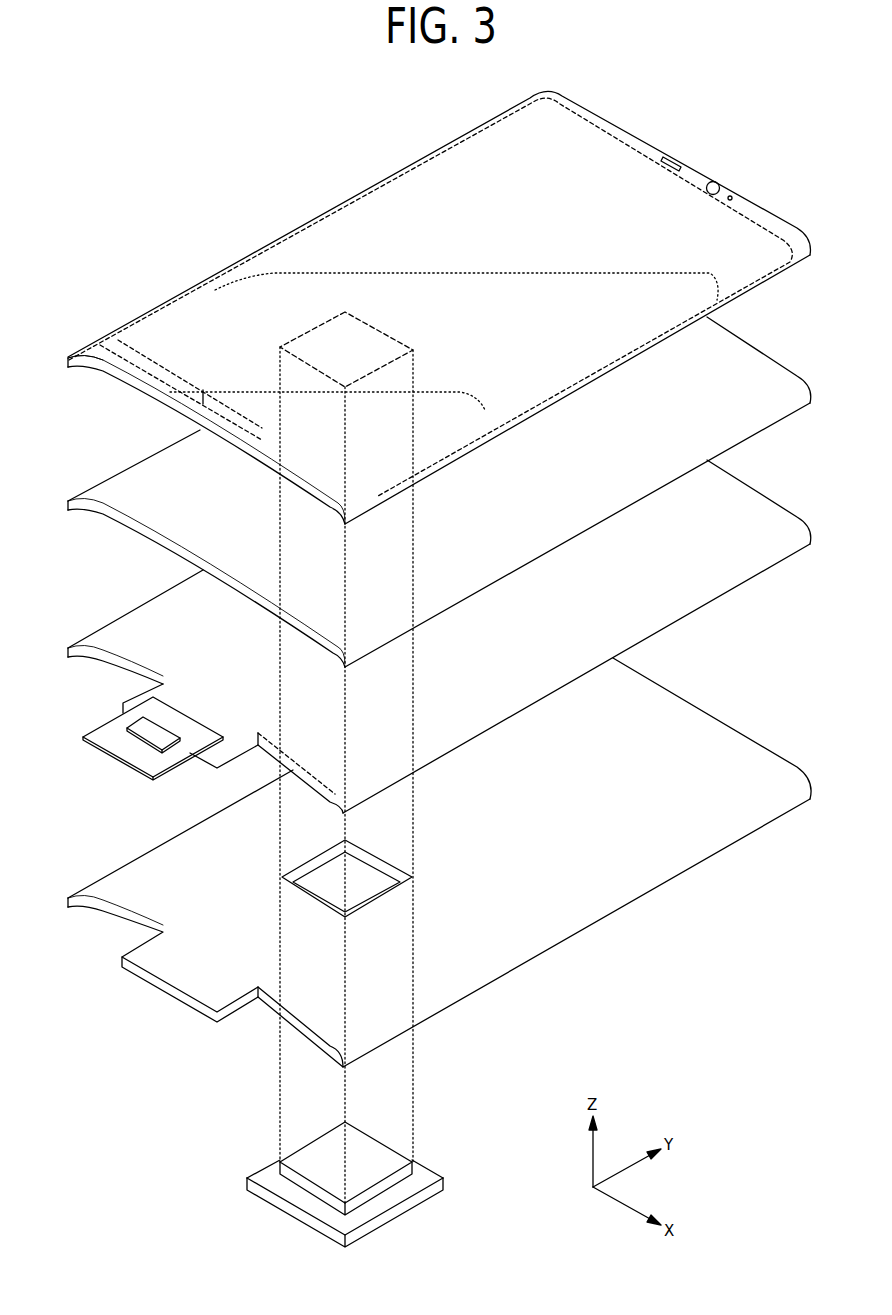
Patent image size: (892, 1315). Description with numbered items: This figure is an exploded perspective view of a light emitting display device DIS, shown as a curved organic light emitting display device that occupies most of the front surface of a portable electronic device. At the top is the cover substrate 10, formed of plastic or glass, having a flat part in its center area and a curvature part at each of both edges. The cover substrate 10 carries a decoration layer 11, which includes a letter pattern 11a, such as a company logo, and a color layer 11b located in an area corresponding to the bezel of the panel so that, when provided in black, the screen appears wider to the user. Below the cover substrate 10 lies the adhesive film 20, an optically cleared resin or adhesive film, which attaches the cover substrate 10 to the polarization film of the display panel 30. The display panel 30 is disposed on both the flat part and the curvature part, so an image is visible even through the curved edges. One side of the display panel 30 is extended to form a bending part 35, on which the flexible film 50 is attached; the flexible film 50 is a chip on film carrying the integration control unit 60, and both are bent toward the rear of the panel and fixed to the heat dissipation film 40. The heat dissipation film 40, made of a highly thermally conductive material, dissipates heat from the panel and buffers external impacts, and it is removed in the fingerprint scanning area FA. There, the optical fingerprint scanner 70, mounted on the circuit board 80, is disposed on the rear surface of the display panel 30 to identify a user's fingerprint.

The cover substrate 10 is at (443, 183).
The decoration layer 11 is at (152, 213).
The letter pattern 11a is at (203, 402).
The color layer 11b is at (98, 352).
The display device DIS is at (324, 166).
The fingerprint scanning area FA is at (327, 320).
The adhesive film 20 is at (738, 369).
The display panel 30 is at (738, 511).
The bending part 35 is at (122, 685).
The heat dissipation film 40 is at (734, 765).
The flexible film 50 is at (130, 750).
The integration control unit 60 is at (123, 717).
The fingerprint scanner 70 is at (343, 1167).
The circuit board 80 is at (387, 1213).